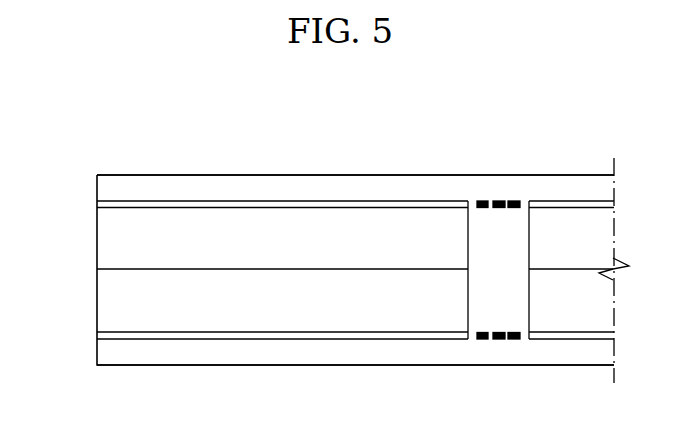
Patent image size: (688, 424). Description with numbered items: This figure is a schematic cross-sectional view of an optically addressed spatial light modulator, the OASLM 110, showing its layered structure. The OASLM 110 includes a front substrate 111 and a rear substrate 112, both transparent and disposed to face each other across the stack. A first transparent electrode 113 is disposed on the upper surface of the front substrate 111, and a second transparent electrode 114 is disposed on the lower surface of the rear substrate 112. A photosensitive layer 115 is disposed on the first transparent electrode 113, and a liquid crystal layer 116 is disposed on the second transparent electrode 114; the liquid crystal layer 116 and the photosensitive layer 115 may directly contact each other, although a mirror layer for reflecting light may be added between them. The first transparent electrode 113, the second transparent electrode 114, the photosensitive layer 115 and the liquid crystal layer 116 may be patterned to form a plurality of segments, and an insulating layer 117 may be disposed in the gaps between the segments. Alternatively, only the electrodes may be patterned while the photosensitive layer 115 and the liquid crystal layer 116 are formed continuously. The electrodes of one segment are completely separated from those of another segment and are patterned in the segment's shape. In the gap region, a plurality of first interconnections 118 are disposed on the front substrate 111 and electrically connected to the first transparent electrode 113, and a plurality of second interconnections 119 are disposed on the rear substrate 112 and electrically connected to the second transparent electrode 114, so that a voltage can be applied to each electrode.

The OASLM 110 is at (548, 127).
The front substrate 111 is at (417, 356).
The rear substrate 112 is at (394, 183).
The first transparent electrode 113 is at (100, 334).
The second transparent electrode 114 is at (100, 205).
The photosensitive layer 115 is at (100, 300).
The liquid crystal layer 116 is at (100, 245).
The insulating layer 117 is at (512, 285).
The first interconnections 118 is at (482, 340).
The second interconnections 119 is at (483, 200).